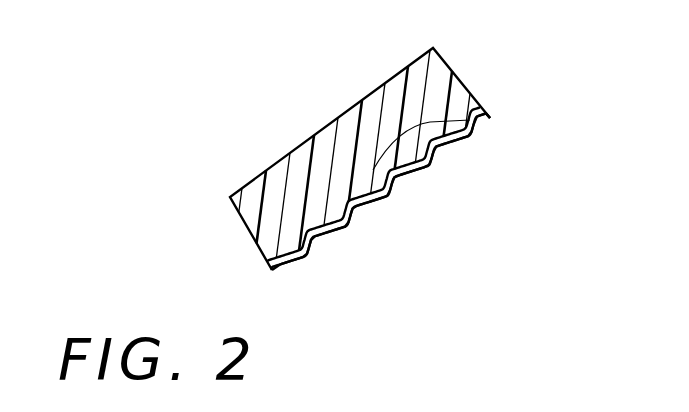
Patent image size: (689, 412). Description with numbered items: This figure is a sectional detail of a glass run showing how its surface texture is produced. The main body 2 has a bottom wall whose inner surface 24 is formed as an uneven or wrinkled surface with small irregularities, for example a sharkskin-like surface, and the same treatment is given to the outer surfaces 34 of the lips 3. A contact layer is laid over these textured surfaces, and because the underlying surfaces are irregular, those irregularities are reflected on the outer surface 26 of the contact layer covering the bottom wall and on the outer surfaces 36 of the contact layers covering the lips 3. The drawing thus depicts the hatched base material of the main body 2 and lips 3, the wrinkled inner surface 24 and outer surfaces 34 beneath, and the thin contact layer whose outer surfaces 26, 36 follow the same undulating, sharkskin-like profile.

The main body 2 is at (360, 157).
The lip 3 is at (320, 164).
The inner surface of the bottom wall 24 is at (441, 147).
The outer surface of the lip 34 is at (485, 111).
The outer surface of the contact layer 26 is at (381, 245).
The outer surface of the contact layer 36 is at (348, 228).